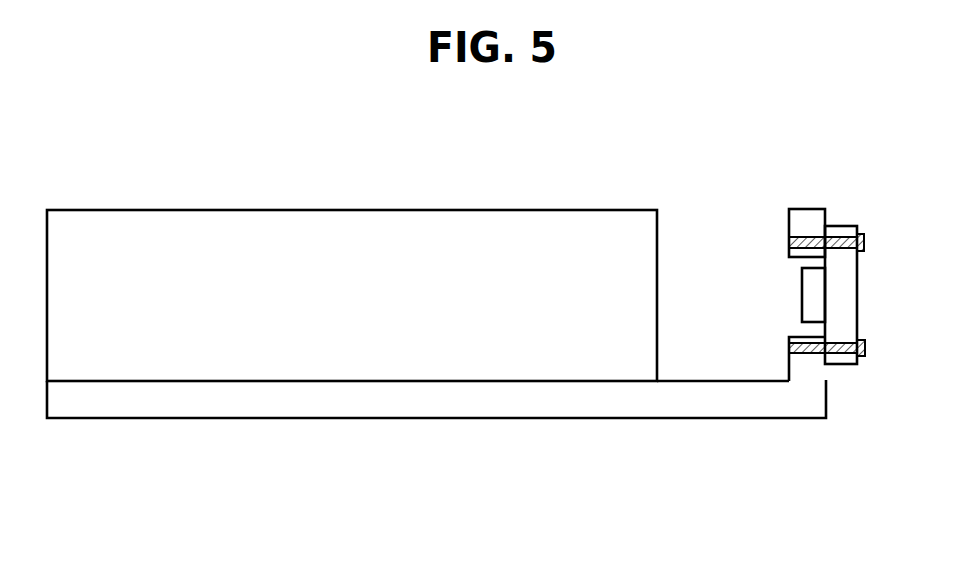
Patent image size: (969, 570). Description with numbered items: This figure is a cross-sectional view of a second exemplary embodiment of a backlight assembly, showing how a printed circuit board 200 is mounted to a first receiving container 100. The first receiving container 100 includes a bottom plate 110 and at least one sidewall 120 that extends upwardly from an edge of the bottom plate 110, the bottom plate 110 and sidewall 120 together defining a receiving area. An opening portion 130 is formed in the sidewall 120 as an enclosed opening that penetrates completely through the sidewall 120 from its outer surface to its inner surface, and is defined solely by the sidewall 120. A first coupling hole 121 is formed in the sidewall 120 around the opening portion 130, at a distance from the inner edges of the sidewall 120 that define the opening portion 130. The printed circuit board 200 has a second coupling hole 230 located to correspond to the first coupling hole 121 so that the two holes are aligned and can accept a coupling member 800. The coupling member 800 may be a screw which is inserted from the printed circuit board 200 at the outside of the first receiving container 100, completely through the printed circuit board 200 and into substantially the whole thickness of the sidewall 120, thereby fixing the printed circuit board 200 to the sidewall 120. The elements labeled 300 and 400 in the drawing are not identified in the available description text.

The first receiving container 100 is at (495, 437).
The bottom plate 110 is at (342, 419).
The sidewall 120 is at (797, 223).
The first coupling hole 121 is at (817, 237).
The opening portion 130 is at (789, 327).
The printed circuit board 200 is at (842, 298).
The second coupling hole 230 is at (843, 238).
The spacer 300 is at (808, 297).
The display panel 400 is at (352, 209).
The coupling member 800 is at (865, 240).